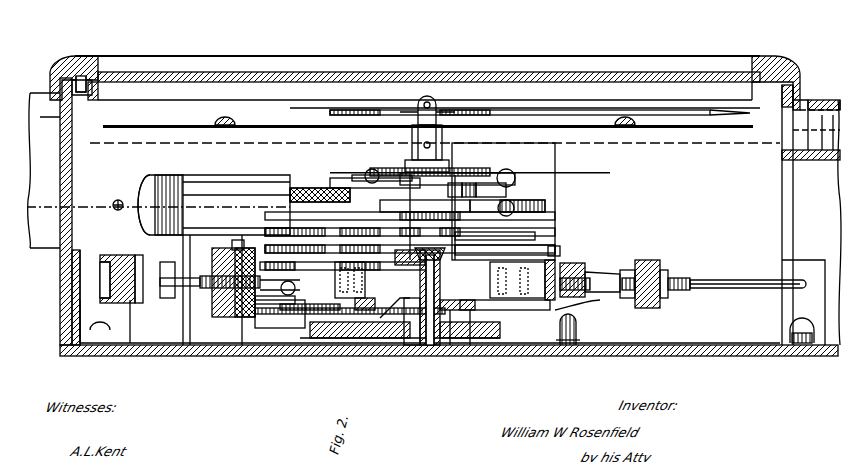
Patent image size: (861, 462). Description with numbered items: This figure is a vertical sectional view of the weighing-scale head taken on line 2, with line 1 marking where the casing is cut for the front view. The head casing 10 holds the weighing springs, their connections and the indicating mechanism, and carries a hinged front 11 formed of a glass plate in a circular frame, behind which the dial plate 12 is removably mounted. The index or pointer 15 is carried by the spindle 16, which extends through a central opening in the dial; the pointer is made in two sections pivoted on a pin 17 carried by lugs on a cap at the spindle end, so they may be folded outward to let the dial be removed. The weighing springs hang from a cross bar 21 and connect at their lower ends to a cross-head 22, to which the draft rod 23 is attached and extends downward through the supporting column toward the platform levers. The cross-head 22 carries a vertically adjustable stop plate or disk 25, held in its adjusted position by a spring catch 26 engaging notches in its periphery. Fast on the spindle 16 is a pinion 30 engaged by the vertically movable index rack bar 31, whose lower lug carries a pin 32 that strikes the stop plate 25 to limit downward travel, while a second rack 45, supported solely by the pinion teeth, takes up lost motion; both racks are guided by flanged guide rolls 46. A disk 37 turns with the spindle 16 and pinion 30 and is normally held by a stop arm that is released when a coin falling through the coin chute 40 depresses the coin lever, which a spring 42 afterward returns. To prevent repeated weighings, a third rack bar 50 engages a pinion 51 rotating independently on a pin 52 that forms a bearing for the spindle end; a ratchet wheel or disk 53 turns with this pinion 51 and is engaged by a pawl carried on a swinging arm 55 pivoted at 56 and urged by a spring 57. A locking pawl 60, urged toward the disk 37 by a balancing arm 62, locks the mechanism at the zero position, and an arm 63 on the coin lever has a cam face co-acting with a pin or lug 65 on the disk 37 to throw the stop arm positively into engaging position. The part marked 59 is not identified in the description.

The section line 1 is at (816, 123).
The section line 2 is at (42, 170).
The head casing 10 is at (60, 300).
The hinged front 11 is at (78, 58).
The dial plate 12 is at (153, 128).
The index or pointer 15 is at (645, 108).
The spindle 16 is at (412, 140).
The pin 17 is at (427, 100).
The cross bar 21 is at (212, 305).
The cross-head 22 is at (600, 275).
The draft rod 23 is at (718, 280).
The stop plate or disk 25 is at (590, 300).
The spring catch 26 is at (556, 246).
The pinion 30 is at (412, 205).
The rack bar 31 is at (395, 252).
The pin 32 is at (505, 277).
The disk 37 is at (380, 170).
The coin chute 40 is at (215, 178).
The spring 42 is at (318, 188).
The second rack 45 is at (358, 178).
The flanged guide rolls 46 is at (423, 277).
The third rack bar 50 is at (320, 322).
The pinion 51 is at (412, 345).
The pin 52 is at (435, 325).
The ratchet wheel or disk 53 is at (478, 325).
The swinging arm 55 is at (300, 305).
The pivot 56 is at (340, 185).
The spring 57 is at (282, 300).
The bar 59 is at (538, 240).
The locking pawl 60 is at (455, 185).
The balancing arm 62 is at (520, 178).
The arm 63 is at (485, 185).
The pin or lug 65 is at (470, 185).